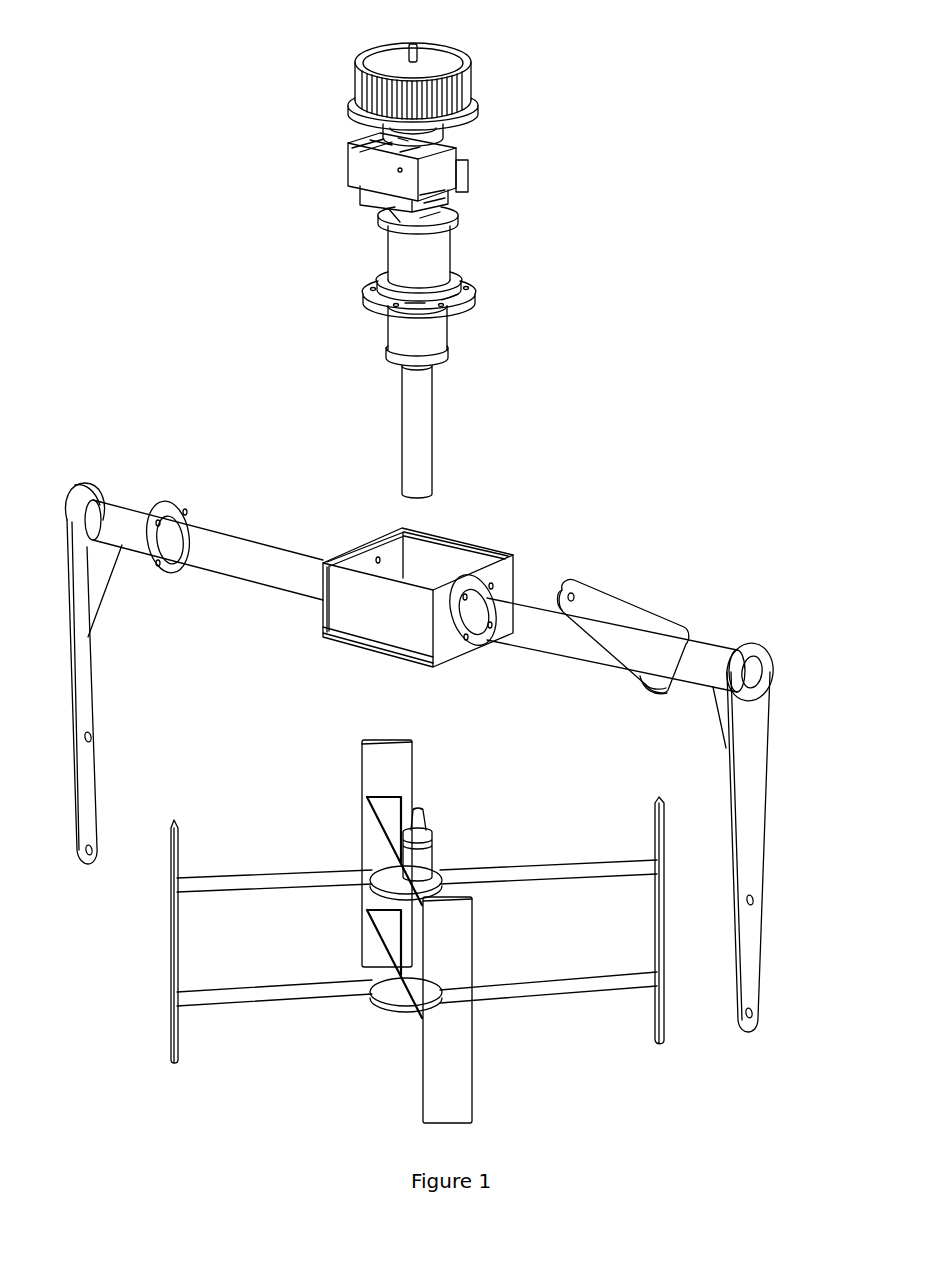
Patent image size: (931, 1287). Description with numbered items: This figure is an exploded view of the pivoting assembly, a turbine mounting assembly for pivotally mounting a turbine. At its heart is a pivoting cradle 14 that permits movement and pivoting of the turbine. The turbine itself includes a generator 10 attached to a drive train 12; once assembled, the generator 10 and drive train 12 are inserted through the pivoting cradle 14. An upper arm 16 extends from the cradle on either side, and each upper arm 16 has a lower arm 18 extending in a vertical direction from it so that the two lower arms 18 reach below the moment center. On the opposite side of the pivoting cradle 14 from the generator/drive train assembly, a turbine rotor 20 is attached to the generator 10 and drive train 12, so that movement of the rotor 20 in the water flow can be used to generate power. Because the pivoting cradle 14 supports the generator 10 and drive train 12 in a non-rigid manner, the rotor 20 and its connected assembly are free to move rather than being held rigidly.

The generator 10 is at (475, 73).
The drive train 12 is at (448, 331).
The pivoting cradle 14 is at (507, 556).
The upper arm 16 is at (712, 650).
The lower arm 18 is at (772, 749).
The turbine rotor 20 is at (473, 1095).